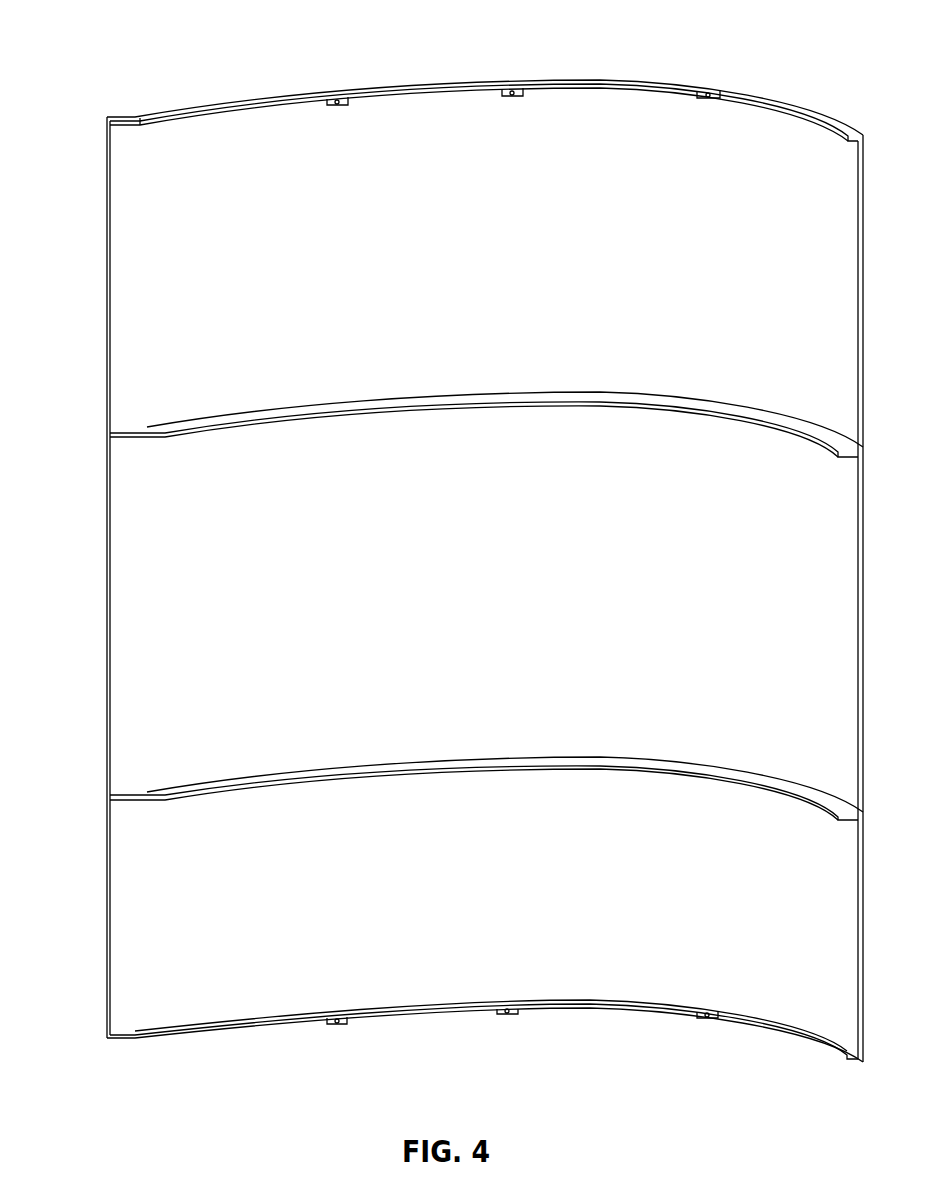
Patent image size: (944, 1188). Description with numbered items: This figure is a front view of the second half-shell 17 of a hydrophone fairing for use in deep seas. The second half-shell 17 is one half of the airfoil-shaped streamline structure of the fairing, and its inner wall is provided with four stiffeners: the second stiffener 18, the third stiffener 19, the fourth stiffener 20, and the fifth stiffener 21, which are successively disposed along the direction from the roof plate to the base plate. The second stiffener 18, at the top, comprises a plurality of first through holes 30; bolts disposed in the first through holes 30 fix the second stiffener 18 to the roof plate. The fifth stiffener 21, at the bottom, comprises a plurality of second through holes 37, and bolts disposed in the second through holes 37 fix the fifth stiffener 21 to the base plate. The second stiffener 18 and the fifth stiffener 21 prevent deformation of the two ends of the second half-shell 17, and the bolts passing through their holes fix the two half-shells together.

The second half-shell 17 is at (202, 276).
The second stiffener 18 is at (133, 115).
The third stiffener 19 is at (162, 431).
The fourth stiffener 20 is at (148, 792).
The fifth stiffener 21 is at (130, 1032).
The first through holes 30 is at (336, 100).
The second through holes 37 is at (334, 1023).